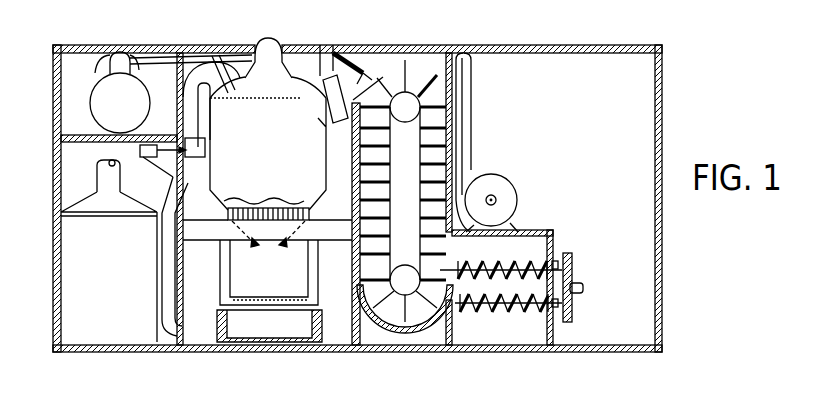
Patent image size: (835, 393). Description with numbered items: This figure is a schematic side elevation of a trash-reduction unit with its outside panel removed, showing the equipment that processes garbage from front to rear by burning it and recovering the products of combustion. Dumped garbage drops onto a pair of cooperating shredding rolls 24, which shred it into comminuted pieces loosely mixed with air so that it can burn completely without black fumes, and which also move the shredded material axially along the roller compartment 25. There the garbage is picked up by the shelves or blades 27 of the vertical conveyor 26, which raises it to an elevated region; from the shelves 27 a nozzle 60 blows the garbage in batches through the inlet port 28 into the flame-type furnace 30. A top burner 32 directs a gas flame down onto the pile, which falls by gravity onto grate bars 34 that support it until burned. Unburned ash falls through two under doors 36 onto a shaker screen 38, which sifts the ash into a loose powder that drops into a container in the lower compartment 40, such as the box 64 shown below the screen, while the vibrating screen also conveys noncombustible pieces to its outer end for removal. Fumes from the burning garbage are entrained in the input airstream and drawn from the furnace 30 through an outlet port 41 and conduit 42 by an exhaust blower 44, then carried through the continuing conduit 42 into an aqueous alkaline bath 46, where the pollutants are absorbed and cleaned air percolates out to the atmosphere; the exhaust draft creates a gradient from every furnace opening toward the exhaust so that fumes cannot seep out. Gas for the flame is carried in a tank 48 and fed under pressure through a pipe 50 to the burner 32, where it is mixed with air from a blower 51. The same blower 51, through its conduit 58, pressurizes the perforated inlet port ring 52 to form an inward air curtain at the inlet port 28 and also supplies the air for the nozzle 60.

The shredding rolls 24 is at (528, 262).
The roller compartment 25 is at (521, 240).
The vertical conveyor 26 is at (436, 123).
The shelves or blades 27 is at (437, 89).
The inlet port 28 is at (384, 66).
The flame-type furnace 30 is at (305, 72).
The top burner 32 is at (248, 46).
The grate bars 34 is at (229, 214).
The under doors 36 is at (255, 247).
The shaker screen 38 is at (252, 294).
The lower compartment 40 is at (340, 333).
The outlet port 41 is at (213, 50).
The conduit 42 is at (194, 95).
The exhaust blower 44 is at (197, 114).
The aqueous alkaline bath 46 is at (72, 268).
The gas tank 48 is at (104, 46).
The pipe 50 is at (156, 47).
The blower 51 is at (507, 177).
The inlet port ring 52 is at (318, 58).
The conduit 58 is at (469, 147).
The nozzle 60 is at (350, 52).
The box 64 is at (249, 333).